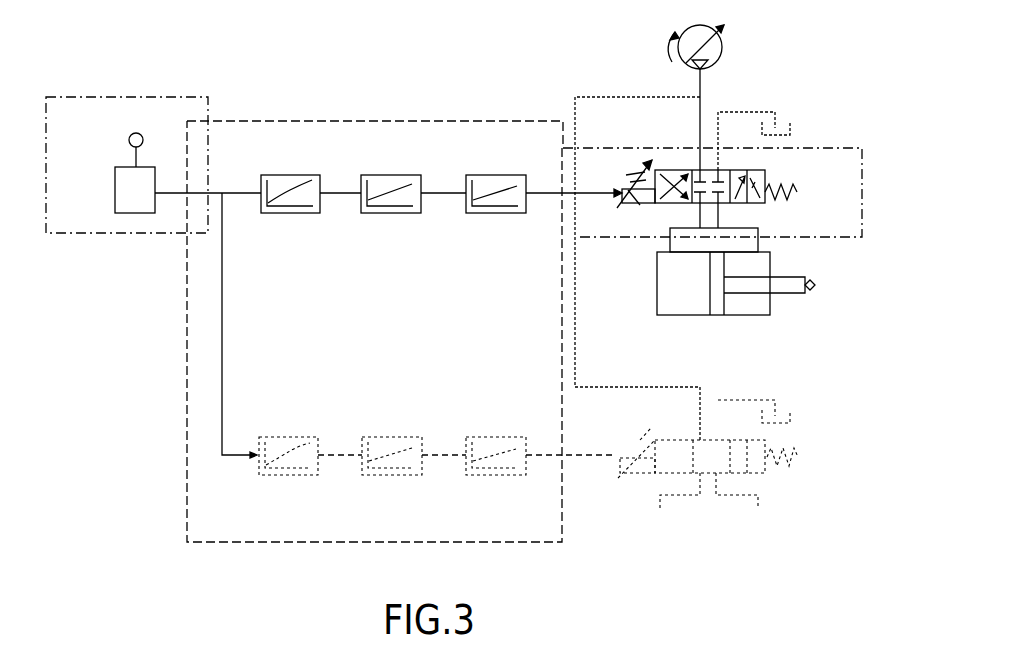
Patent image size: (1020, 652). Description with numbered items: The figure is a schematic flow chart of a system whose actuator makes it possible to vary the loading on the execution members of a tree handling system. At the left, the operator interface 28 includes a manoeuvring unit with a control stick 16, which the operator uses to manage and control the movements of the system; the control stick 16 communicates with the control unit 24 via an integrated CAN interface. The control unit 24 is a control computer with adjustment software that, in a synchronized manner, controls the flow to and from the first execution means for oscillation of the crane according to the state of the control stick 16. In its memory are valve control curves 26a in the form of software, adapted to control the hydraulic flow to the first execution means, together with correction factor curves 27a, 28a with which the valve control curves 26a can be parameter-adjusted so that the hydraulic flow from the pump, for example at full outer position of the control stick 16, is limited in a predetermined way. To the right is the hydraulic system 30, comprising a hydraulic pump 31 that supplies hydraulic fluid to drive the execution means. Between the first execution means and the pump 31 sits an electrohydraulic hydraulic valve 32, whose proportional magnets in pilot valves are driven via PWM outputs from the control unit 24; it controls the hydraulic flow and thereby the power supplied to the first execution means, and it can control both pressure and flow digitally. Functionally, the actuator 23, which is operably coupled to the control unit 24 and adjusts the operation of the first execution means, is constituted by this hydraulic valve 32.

The operator interface 28 is at (108, 107).
The control stick 16 is at (130, 185).
The control unit 24 is at (437, 121).
The valve control curves 26a is at (286, 214).
The correction factor curve 27a is at (396, 214).
The correction factor curve 28a is at (499, 214).
The hydraulic system 30 is at (585, 88).
The hydraulic pump 31 is at (722, 42).
The actuator 23 is at (836, 152).
The electrohydraulic hydraulic valve 32 is at (790, 190).